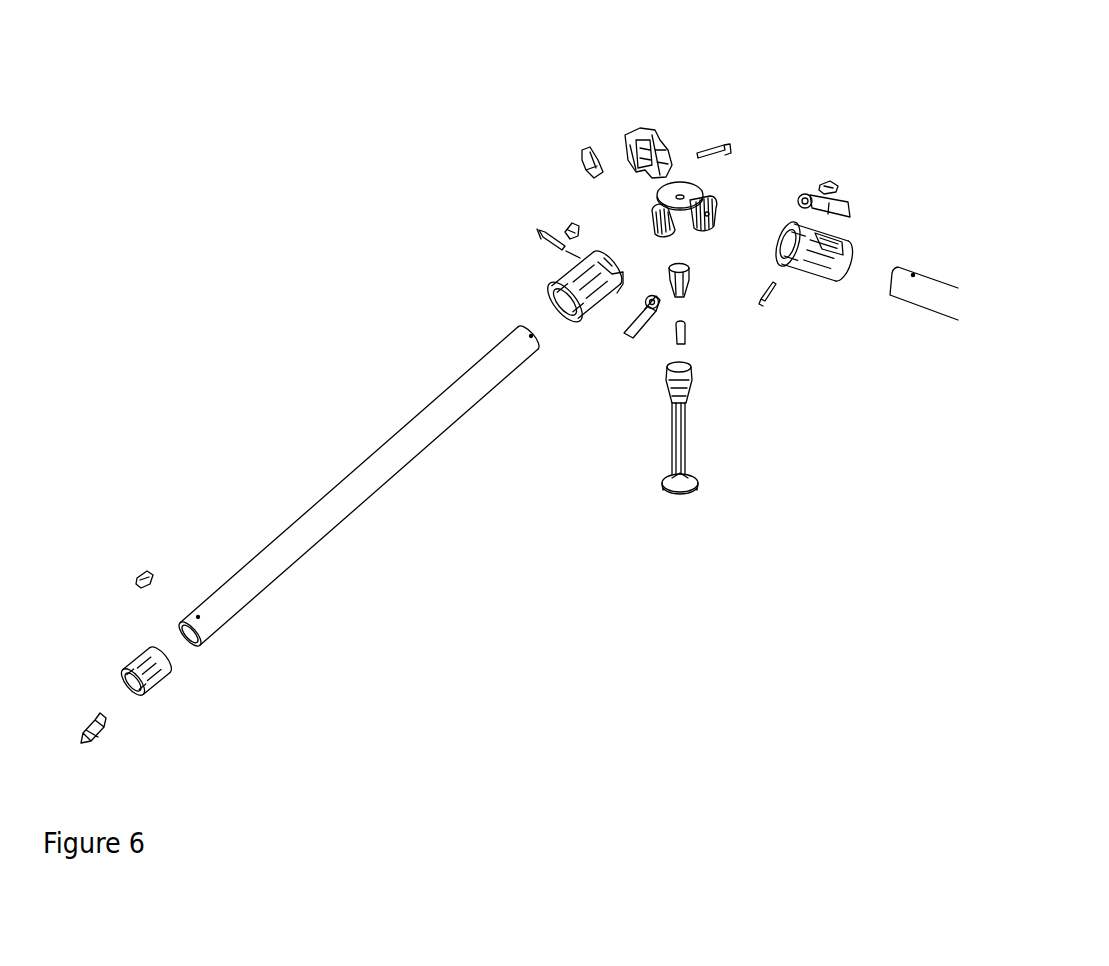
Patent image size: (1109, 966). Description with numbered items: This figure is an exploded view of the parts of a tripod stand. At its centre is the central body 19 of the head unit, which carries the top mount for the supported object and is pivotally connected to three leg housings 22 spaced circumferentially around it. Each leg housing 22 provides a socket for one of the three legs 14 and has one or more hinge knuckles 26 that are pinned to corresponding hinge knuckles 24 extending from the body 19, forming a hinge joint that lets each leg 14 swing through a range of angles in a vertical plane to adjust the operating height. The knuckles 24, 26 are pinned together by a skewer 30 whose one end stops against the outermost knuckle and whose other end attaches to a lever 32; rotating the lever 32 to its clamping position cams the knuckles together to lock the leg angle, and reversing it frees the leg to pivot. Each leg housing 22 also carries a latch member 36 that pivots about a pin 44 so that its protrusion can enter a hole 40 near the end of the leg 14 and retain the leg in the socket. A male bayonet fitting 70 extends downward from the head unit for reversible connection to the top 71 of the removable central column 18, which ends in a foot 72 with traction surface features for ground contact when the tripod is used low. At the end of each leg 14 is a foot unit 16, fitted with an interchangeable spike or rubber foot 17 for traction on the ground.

The leg 14 is at (353, 497).
The foot unit 16 is at (140, 733).
The spike or rubber foot 17 is at (87, 747).
The central column 18 is at (710, 462).
The central body 19 is at (717, 187).
The leg housing 22 is at (661, 120).
The hinge knuckle 24 is at (716, 228).
The hinge knuckle 26 is at (638, 190).
The skewer 30 is at (537, 248).
The lever 32 is at (570, 152).
The latch member 36 is at (568, 216).
The hole 40 is at (512, 318).
The pin 44 is at (833, 226).
The male bayonet fitting 70 is at (672, 297).
The top of the central column 71 is at (693, 357).
The foot 72 is at (682, 508).